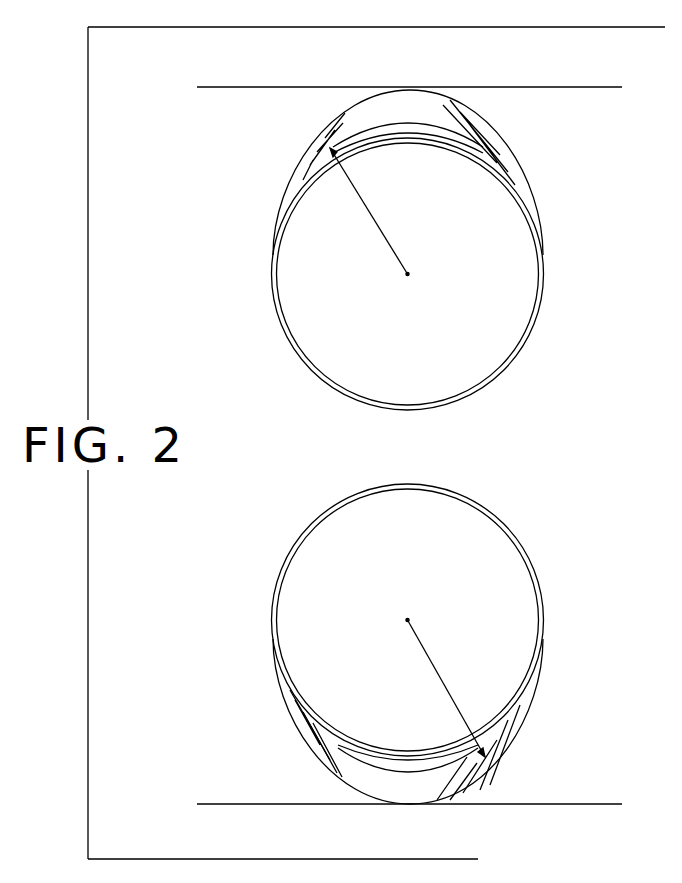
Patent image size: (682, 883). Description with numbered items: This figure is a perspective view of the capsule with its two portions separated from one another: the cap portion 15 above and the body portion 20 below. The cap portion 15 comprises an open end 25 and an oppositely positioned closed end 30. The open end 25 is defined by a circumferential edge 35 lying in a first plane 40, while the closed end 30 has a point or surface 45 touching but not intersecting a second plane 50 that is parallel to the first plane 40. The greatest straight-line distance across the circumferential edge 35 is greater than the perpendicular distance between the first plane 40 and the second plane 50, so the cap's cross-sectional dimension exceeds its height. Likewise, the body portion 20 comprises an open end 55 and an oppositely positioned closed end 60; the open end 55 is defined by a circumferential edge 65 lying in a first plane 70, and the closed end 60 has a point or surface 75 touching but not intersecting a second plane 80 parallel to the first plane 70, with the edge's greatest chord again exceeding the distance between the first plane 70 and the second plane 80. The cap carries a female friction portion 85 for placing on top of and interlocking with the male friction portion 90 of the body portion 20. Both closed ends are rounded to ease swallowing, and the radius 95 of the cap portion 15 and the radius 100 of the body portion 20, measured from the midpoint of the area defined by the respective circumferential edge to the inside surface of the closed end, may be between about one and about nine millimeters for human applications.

The cap portion 15 is at (492, 140).
The body portion 20 is at (520, 710).
The open end 25 is at (505, 345).
The closed end 30 is at (455, 125).
The circumferential edge 35 is at (547, 275).
The first plane 40 is at (440, 335).
The point or surface 45 is at (405, 88).
The second plane 50 is at (230, 86).
The open end 55 is at (527, 617).
The closed end 60 is at (473, 780).
The circumferential edge 65 is at (537, 573).
The first plane 70 is at (473, 645).
The point or surface 75 is at (408, 806).
The second plane 80 is at (232, 806).
The female friction portion 85 is at (510, 176).
The male friction portion 90 is at (302, 713).
The radius 95 is at (368, 222).
The radius 100 is at (425, 645).